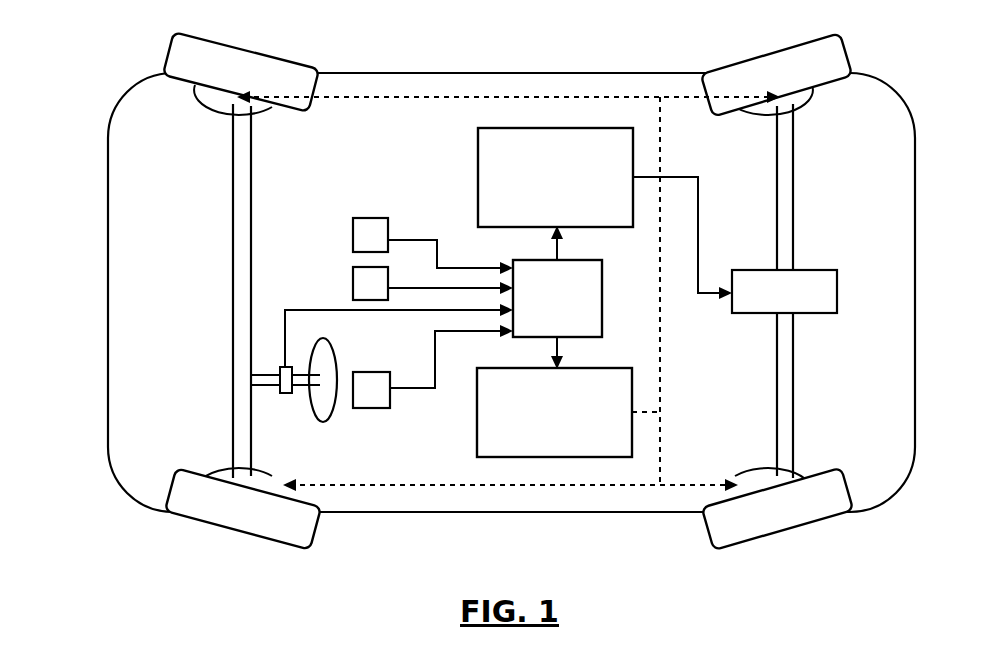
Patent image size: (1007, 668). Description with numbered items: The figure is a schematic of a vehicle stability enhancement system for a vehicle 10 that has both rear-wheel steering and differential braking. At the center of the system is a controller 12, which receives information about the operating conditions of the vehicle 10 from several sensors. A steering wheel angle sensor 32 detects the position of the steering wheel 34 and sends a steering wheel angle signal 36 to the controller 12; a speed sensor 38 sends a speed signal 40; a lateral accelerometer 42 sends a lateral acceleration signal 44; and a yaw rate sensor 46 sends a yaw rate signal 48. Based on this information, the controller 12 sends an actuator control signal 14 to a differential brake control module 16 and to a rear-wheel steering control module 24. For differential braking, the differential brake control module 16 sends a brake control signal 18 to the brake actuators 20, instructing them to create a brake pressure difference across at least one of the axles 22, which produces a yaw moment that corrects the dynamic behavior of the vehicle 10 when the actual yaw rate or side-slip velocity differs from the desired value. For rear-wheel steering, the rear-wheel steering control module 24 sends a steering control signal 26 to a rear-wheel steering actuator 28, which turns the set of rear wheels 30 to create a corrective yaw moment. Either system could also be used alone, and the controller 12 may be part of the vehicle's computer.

The vehicle 10 is at (108, 232).
The controller 12 is at (605, 283).
The actuator control signal 14 is at (560, 253).
The differential brake control module 16 is at (477, 432).
The brake control signal 18 is at (378, 100).
The brake actuators 20 is at (222, 97).
The axles 22 is at (235, 262).
The rear-wheel steering control module 24 is at (478, 150).
The steering control signal 26 is at (700, 224).
The rear-wheel steering actuator 28 is at (830, 300).
The rear wheels 30 is at (790, 45).
The steering wheel angle sensor 32 is at (278, 370).
The steering wheel 34 is at (320, 415).
The steering wheel angle signal 36 is at (295, 308).
The speed sensor 38 is at (353, 222).
The speed signal 40 is at (405, 240).
The lateral accelerometer 42 is at (378, 410).
The lateral acceleration signal 44 is at (435, 355).
The yaw rate sensor 46 is at (353, 282).
The yaw rate signal 48 is at (435, 290).